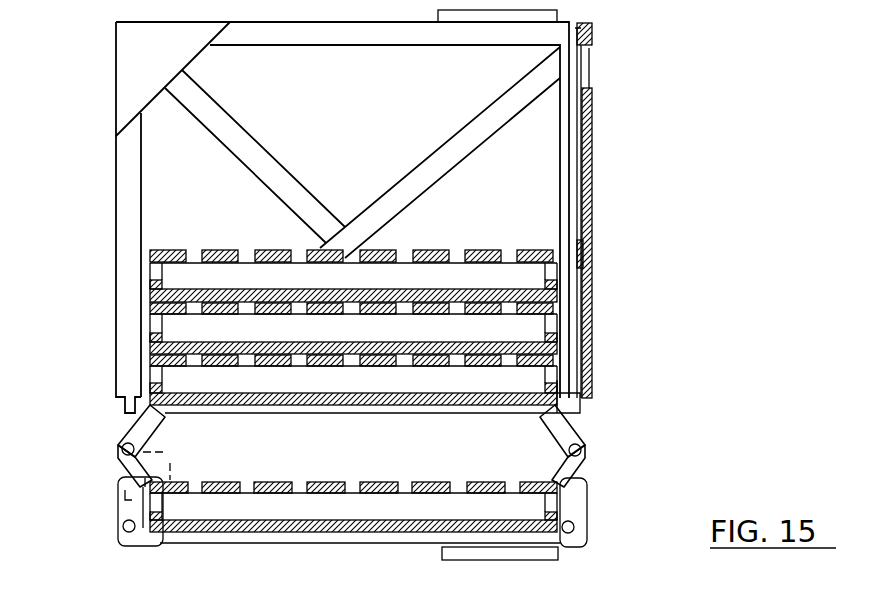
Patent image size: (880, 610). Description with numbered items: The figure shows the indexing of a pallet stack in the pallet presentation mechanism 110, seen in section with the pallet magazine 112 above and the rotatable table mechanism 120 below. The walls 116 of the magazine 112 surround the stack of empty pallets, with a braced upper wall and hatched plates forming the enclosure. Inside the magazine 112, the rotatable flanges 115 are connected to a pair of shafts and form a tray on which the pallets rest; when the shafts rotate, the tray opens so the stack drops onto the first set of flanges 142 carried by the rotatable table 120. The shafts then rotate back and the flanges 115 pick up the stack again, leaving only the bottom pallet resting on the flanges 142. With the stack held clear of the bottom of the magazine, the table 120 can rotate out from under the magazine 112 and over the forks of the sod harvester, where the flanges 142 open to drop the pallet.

The pallet presentation mechanism 110 is at (594, 196).
The pallet magazine 112 is at (590, 327).
The rotatable flanges 115 is at (113, 452).
The walls 116 is at (121, 345).
The rotatable table mechanism 120 is at (190, 545).
The first set of flanges 142 is at (120, 507).